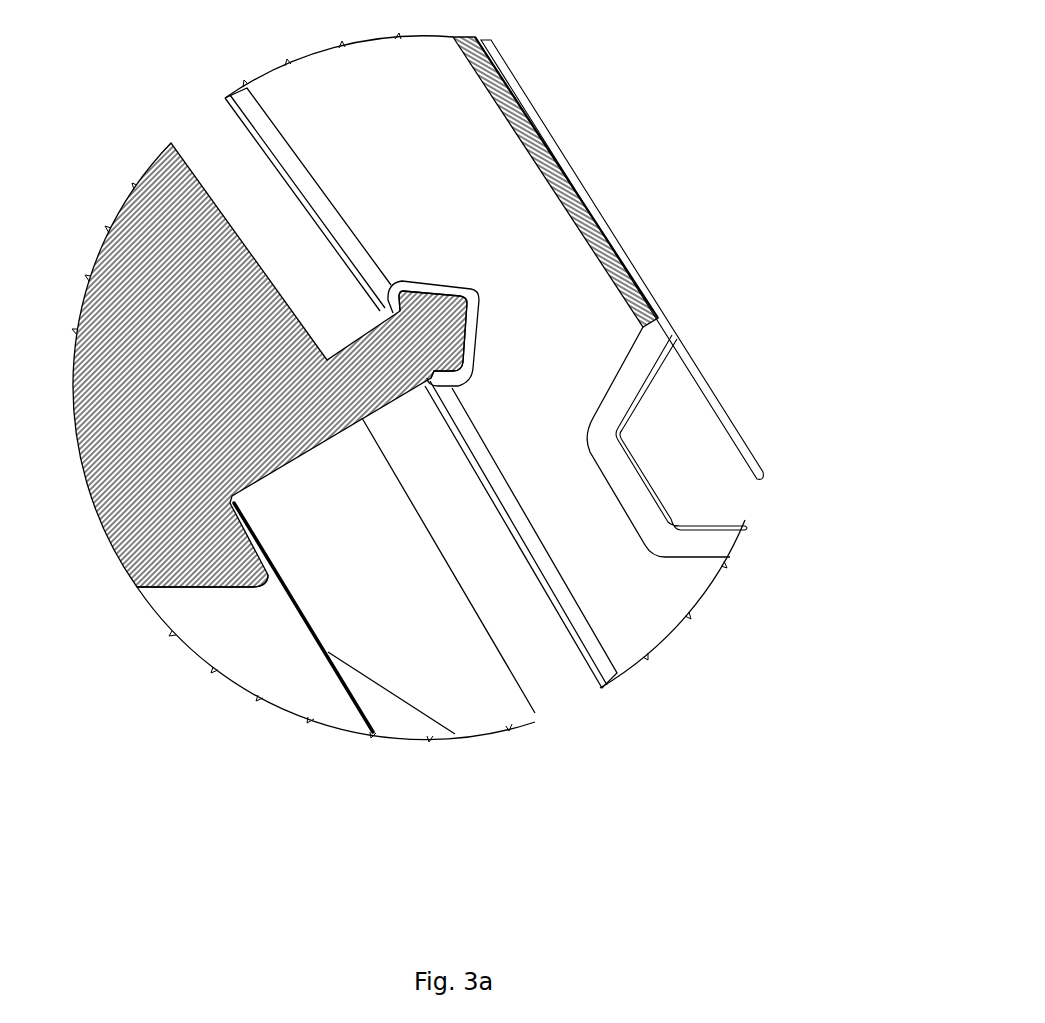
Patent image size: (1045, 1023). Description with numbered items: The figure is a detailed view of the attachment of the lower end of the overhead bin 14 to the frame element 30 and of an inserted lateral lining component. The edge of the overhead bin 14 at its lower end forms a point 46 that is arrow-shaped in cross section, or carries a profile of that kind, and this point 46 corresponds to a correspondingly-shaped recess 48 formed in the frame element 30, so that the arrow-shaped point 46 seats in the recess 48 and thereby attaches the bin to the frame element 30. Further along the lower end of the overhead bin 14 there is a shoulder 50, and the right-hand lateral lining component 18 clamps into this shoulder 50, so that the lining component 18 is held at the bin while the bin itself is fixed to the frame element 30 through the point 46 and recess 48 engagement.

The overhead bin 14 is at (95, 285).
The right-hand lateral lining component 18 is at (300, 615).
The frame element 30 is at (510, 205).
The point 46 is at (465, 345).
The recess 48 is at (475, 300).
The shoulder 50 is at (140, 585).